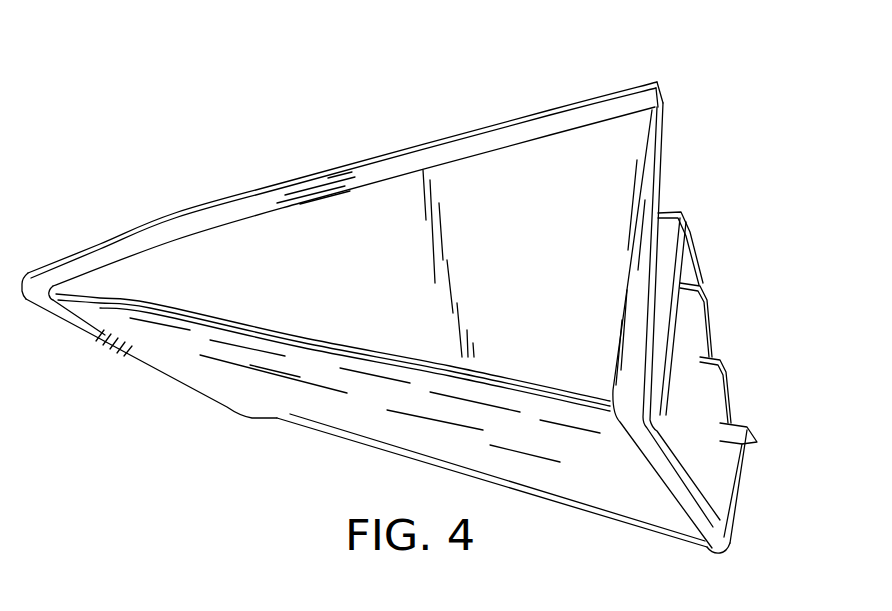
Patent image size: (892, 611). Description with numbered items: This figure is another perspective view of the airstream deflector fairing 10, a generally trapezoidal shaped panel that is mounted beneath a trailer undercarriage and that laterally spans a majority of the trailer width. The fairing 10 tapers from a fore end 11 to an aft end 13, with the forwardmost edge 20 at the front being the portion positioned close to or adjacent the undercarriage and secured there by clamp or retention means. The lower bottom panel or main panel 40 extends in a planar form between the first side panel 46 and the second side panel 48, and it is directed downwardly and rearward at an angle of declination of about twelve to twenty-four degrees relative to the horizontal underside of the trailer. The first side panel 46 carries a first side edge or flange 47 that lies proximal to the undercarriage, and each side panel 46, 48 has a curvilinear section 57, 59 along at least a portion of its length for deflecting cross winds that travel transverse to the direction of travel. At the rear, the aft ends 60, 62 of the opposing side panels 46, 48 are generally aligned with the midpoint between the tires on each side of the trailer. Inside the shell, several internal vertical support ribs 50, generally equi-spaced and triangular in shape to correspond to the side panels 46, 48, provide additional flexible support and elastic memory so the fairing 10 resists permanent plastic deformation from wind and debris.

The airstream deflector fairing 10 is at (258, 156).
The fore end 11 is at (115, 351).
The aft end 13 is at (673, 166).
The forwardmost edge 20 is at (165, 375).
The main panel 40 is at (368, 422).
The first side panel 46 is at (500, 188).
The first side edge or flange 47 is at (393, 170).
The second side panel 48 is at (725, 460).
The internal vertical support ribs 50 is at (711, 270).
The curvilinear section 57 is at (330, 350).
The curvilinear section 59 is at (622, 523).
The aft end of first side panel 60 is at (660, 88).
The aft end of second side panel 62 is at (757, 440).